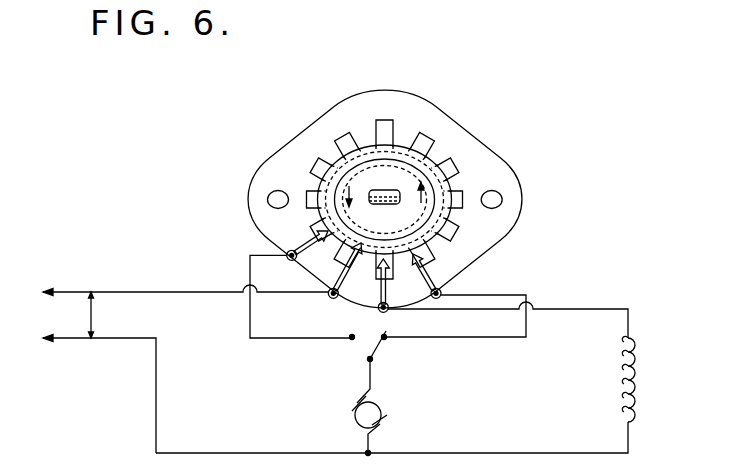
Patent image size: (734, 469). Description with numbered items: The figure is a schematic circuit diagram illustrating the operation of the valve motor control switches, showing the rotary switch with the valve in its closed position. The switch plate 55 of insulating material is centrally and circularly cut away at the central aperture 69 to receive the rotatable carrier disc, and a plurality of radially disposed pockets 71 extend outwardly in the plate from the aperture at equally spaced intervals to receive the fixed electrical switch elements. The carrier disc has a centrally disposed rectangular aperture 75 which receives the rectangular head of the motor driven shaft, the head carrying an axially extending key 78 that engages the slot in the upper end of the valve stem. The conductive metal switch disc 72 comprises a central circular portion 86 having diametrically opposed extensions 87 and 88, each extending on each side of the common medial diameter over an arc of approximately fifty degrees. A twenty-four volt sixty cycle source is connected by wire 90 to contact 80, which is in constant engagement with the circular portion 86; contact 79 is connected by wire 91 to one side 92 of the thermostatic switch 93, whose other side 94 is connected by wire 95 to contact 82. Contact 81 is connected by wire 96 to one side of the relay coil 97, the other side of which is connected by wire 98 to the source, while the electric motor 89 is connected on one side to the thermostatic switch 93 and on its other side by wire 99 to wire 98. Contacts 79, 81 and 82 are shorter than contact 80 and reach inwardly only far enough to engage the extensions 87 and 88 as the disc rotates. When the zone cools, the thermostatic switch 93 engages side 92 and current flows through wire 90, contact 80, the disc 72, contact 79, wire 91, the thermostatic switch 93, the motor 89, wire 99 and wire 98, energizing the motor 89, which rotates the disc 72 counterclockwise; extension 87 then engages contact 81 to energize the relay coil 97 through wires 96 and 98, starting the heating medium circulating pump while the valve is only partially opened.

The switch plate 55 is at (483, 147).
The central aperture 69 is at (433, 182).
The pockets 71 is at (422, 134).
The switch disc 72 is at (395, 216).
The rectangular aperture 75 is at (386, 190).
The key 78 is at (382, 190).
The contact 79 is at (312, 243).
The contact 80 is at (344, 285).
The contact 81 is at (388, 288).
The contact 82 is at (428, 272).
The central circular portion 86 is at (372, 141).
The extension 87 is at (318, 179).
The extension 88 is at (453, 173).
The electric motor 89 is at (382, 403).
The wire 90 is at (160, 292).
The wire 91 is at (252, 323).
The side of thermostatic switch 92 is at (352, 334).
The thermostatic switch 93 is at (380, 350).
The side of thermostatic switch 94 is at (386, 333).
The wire 95 is at (455, 337).
The wire 96 is at (587, 309).
The relay coil 97 is at (640, 356).
The wire 98 is at (472, 453).
The wire 99 is at (374, 438).